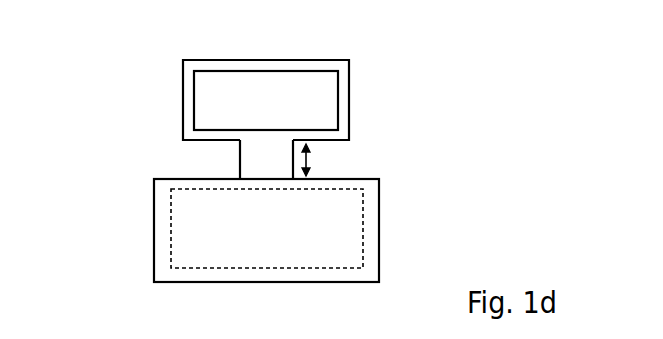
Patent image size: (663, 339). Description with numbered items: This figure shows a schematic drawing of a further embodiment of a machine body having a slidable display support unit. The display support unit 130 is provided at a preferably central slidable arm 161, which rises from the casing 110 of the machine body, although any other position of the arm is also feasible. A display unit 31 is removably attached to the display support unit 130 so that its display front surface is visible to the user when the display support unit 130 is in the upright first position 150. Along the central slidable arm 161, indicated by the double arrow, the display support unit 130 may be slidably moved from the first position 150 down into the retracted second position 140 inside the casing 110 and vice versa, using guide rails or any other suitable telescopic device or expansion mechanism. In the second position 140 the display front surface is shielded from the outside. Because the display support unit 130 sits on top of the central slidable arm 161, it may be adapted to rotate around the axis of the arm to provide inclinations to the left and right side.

The display support unit 130 is at (338, 71).
The first position 150 is at (327, 104).
The display unit 31 is at (258, 96).
The central slidable arm 161 is at (239, 161).
The casing 110 is at (154, 211).
The second position 140 is at (342, 238).